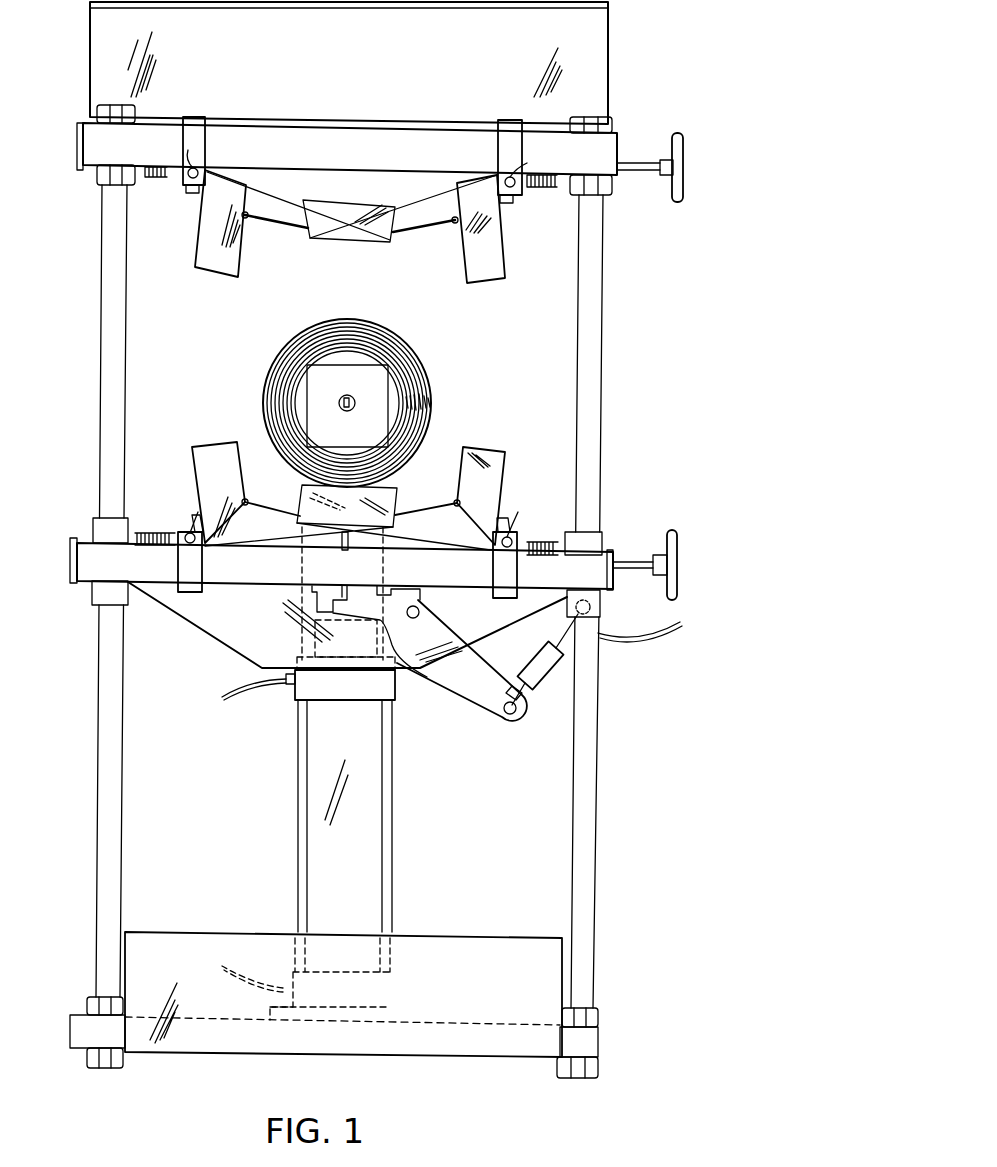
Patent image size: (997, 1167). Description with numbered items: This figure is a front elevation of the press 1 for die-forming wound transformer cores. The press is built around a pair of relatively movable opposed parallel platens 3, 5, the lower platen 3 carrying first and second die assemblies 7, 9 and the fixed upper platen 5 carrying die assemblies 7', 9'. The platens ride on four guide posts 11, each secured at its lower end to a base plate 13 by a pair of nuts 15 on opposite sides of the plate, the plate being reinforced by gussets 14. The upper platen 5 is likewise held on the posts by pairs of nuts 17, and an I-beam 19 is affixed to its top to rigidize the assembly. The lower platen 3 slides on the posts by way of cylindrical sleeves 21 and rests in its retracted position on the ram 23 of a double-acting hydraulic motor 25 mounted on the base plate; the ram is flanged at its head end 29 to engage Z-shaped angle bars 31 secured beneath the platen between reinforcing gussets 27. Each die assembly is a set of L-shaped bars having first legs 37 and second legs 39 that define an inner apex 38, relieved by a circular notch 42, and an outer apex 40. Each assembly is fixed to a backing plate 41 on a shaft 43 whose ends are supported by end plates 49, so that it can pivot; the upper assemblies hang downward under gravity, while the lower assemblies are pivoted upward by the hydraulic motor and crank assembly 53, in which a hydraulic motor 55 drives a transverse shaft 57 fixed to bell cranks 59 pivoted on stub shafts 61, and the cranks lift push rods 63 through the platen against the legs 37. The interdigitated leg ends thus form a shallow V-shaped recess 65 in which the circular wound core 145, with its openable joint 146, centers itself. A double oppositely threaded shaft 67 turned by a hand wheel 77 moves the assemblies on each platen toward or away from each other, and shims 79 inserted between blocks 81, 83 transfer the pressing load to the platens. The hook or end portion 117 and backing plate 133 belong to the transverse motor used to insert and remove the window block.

The press 1 is at (696, 354).
The lower platen 3 is at (598, 556).
The upper platen 5 is at (600, 142).
The first die assembly 7 is at (179, 471).
The first die assembly 7' is at (196, 288).
The second die assembly 9 is at (513, 462).
The second die assembly 9' is at (497, 295).
The guide posts 11 is at (100, 372).
The base plate 13 is at (498, 1048).
The gussets 14 is at (478, 948).
The nuts 15 is at (76, 1052).
The nuts 17 is at (118, 116).
The I-beam 19 is at (104, 64).
The cylindrical sleeves 21 is at (100, 536).
The ram 23 is at (316, 646).
The hydraulic motor 25 is at (300, 812).
The reinforcing gussets 27 is at (224, 630).
The head end 29 is at (300, 620).
The Z-shaped angle bars 31 is at (318, 592).
The first legs 37 is at (297, 228).
The inner apex 38 is at (247, 218).
The second legs 39 is at (207, 246).
The outer apex 40 is at (497, 173).
The backing plate 41 is at (200, 193).
The circular notch 42 is at (244, 214).
The shaft 43 is at (162, 556).
The end plates 49 is at (198, 130).
The hydraulic motor and crank assembly 53 is at (482, 710).
The hydraulic motor 55 is at (556, 664).
The transverse shaft 57 is at (508, 716).
The bell cranks 59 is at (478, 688).
The stub shafts 61 is at (420, 612).
The push rod 63 is at (345, 550).
The V-shaped recess 65 is at (344, 243).
The double oppositely threaded shaft 67 is at (640, 172).
The hand wheel 77 is at (684, 160).
The shims 79 is at (156, 180).
The elongate block 81 is at (135, 180).
The elongate block 83 is at (175, 177).
The end portion 117 is at (345, 396).
The backing plate 133 is at (318, 390).
The circular wound core 145 is at (426, 368).
The openable joint 146 is at (428, 412).